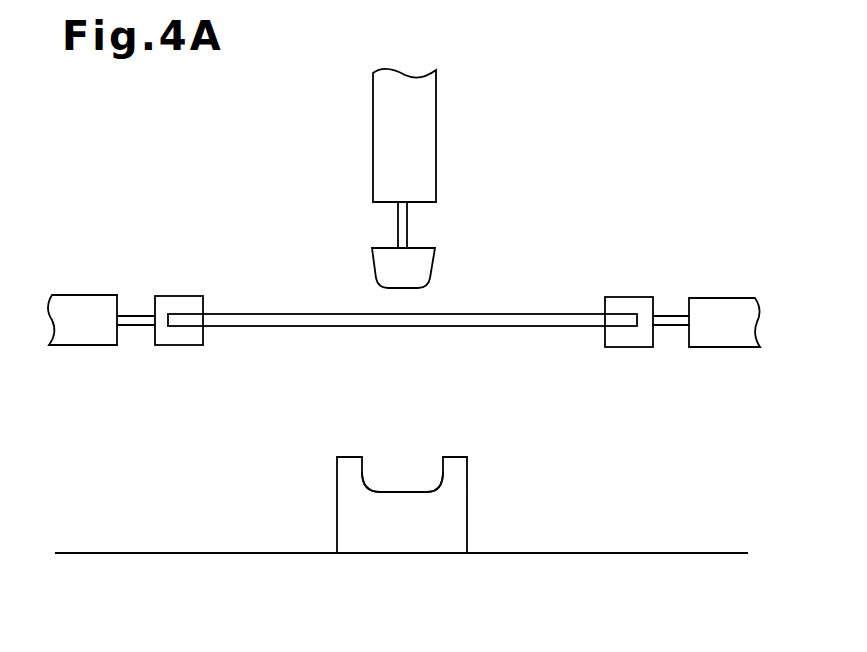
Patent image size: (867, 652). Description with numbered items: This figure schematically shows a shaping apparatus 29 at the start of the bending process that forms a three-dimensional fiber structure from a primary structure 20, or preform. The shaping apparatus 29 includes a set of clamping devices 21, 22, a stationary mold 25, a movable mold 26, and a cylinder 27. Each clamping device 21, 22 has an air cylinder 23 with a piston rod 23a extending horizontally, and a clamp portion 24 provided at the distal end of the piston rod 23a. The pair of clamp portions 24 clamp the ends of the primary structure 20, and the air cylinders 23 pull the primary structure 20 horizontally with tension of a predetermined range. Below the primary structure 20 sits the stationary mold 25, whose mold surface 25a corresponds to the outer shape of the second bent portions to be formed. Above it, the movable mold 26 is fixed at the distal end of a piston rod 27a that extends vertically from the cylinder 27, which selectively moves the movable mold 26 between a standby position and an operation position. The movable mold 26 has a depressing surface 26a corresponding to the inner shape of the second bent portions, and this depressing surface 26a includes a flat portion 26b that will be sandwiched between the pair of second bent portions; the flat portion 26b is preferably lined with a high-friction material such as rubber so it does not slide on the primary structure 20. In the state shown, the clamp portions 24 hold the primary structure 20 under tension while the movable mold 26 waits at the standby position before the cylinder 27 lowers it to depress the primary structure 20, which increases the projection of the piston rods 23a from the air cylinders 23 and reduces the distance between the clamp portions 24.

The primary structure 20 is at (246, 326).
The clamping device 21 is at (86, 283).
The clamping device 22 is at (727, 282).
The air cylinder 23 is at (75, 343).
The piston rod 23a is at (133, 326).
The clamp portion 24 is at (178, 296).
The stationary mold 25 is at (455, 510).
The mold surface 25a is at (418, 488).
The movable mold 26 is at (428, 258).
The depressing surface 26a is at (428, 288).
The flat portion 26b is at (393, 290).
The cylinder 27 is at (422, 118).
The piston rod 27a is at (408, 226).
The shaping apparatus 29 is at (437, 76).